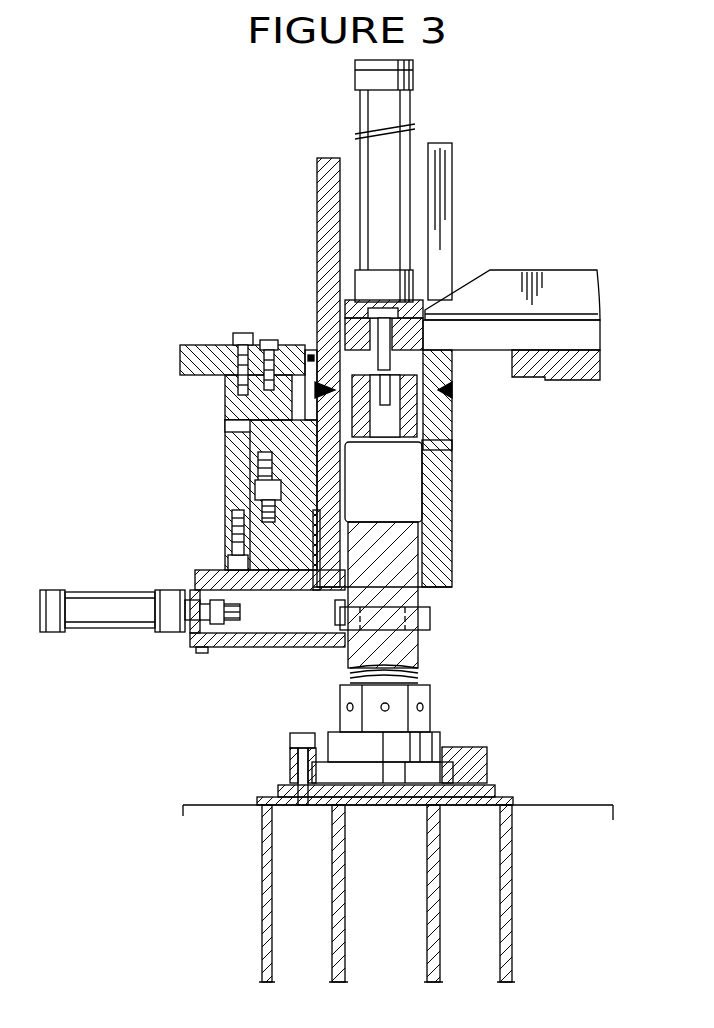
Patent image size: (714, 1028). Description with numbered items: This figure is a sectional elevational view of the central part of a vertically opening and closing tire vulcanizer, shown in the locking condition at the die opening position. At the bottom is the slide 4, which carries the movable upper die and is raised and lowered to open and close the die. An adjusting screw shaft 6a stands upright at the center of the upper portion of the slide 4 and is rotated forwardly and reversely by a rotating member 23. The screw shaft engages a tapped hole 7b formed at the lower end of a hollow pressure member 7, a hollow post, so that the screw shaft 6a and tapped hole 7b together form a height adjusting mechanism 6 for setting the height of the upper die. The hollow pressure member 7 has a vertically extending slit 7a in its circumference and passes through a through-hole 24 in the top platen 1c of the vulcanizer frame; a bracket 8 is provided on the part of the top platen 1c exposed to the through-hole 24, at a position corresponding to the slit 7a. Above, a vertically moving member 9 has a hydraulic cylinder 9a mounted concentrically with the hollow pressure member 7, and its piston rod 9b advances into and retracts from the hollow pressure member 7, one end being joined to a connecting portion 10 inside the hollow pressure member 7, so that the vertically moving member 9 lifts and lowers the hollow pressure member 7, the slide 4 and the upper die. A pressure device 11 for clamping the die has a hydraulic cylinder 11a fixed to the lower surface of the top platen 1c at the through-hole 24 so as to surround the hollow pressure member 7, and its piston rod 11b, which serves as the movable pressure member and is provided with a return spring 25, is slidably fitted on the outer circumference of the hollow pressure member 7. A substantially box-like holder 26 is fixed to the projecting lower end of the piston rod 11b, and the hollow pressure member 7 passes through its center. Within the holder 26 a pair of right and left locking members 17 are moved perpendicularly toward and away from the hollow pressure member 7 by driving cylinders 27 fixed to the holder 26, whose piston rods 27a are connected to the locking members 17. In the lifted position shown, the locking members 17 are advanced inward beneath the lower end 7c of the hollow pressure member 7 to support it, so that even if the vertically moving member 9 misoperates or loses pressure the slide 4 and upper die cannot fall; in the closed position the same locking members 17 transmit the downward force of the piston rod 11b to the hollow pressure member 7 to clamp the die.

The vertically moving member 9 is at (424, 106).
The hydraulic cylinder 9a is at (375, 157).
The piston rod 9b is at (375, 300).
The hollow pressure member 7 is at (316, 201).
The slit 7a is at (448, 180).
The bracket 8 is at (558, 290).
The top platen 1c is at (525, 358).
The connecting portion 10 is at (430, 362).
The through-hole 24 is at (305, 350).
The hydraulic cylinder 11a is at (235, 405).
The pressure device 11 is at (216, 446).
The piston rod 11b is at (268, 448).
The return spring 25 is at (263, 530).
The holder 26 is at (222, 570).
The locking members 17 is at (265, 640).
The driving cylinders 27 is at (110, 605).
The piston rods 27a is at (207, 650).
The tapped hole 7b is at (420, 545).
The lower end 7c is at (435, 590).
The height adjusting mechanism 6 is at (418, 668).
The adjusting screw shaft 6a is at (420, 648).
The rotating member 23 is at (432, 712).
The slide 4 is at (540, 805).